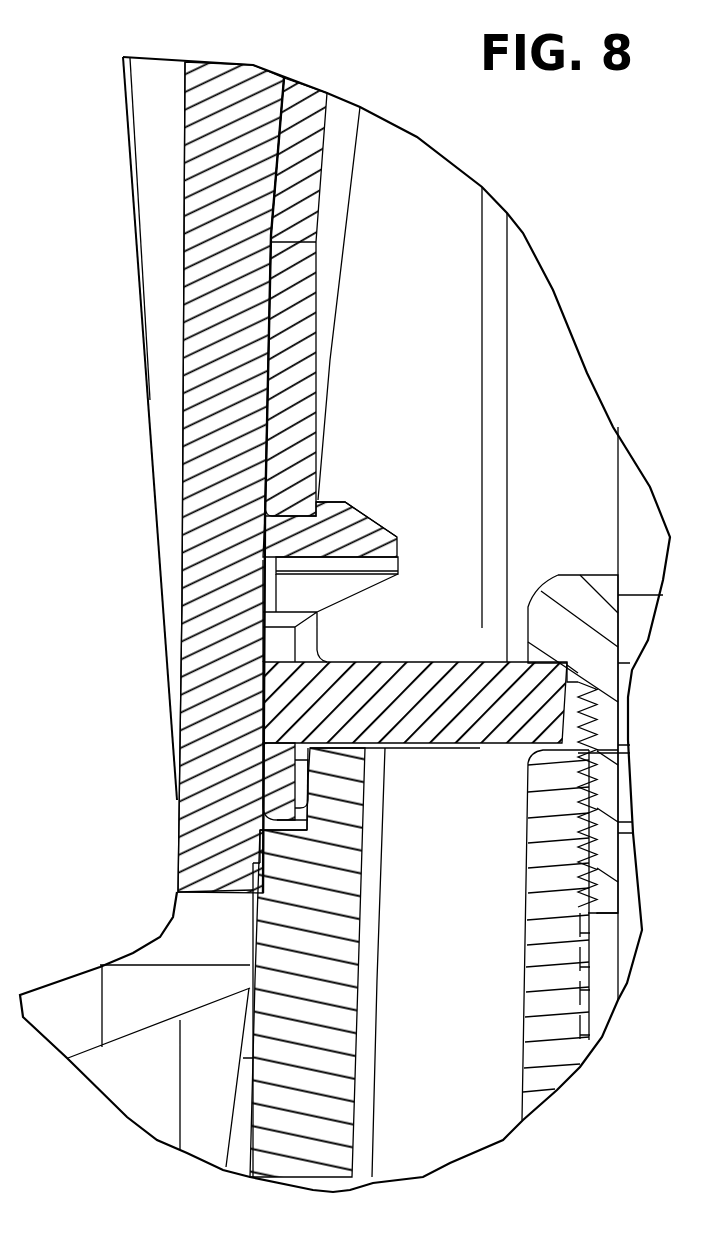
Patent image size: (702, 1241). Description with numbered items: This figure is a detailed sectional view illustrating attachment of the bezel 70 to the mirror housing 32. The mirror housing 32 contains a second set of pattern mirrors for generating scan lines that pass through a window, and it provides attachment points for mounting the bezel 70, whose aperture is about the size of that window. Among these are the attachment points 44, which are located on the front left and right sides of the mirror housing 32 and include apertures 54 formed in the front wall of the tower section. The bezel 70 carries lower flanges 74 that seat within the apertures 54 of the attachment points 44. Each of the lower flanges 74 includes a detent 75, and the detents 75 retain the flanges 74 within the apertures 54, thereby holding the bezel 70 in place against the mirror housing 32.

The mirror housing 32 is at (565, 397).
The attachment points 44 is at (332, 592).
The apertures 54 is at (322, 500).
The bezel 70 is at (182, 388).
The lower flanges 74 is at (367, 530).
The detents 75 is at (347, 517).